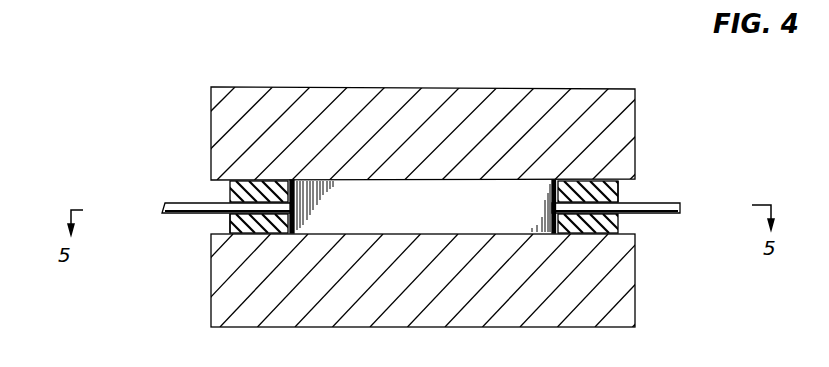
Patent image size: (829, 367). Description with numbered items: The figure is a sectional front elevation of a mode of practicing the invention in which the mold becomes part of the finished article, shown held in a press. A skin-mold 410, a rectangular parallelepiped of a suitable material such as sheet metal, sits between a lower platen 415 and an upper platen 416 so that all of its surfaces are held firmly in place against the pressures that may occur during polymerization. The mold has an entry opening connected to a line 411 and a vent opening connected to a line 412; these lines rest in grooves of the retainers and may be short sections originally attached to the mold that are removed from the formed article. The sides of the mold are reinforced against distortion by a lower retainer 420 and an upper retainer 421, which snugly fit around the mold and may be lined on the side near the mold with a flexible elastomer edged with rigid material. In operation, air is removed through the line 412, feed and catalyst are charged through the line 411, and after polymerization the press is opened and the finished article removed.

The skin-mold 410 is at (432, 182).
The line 411 is at (170, 215).
The line 412 is at (672, 198).
The lower platen 415 is at (622, 297).
The upper platen 416 is at (617, 117).
The lower retainer 420 is at (228, 192).
The upper retainer 421 is at (222, 222).